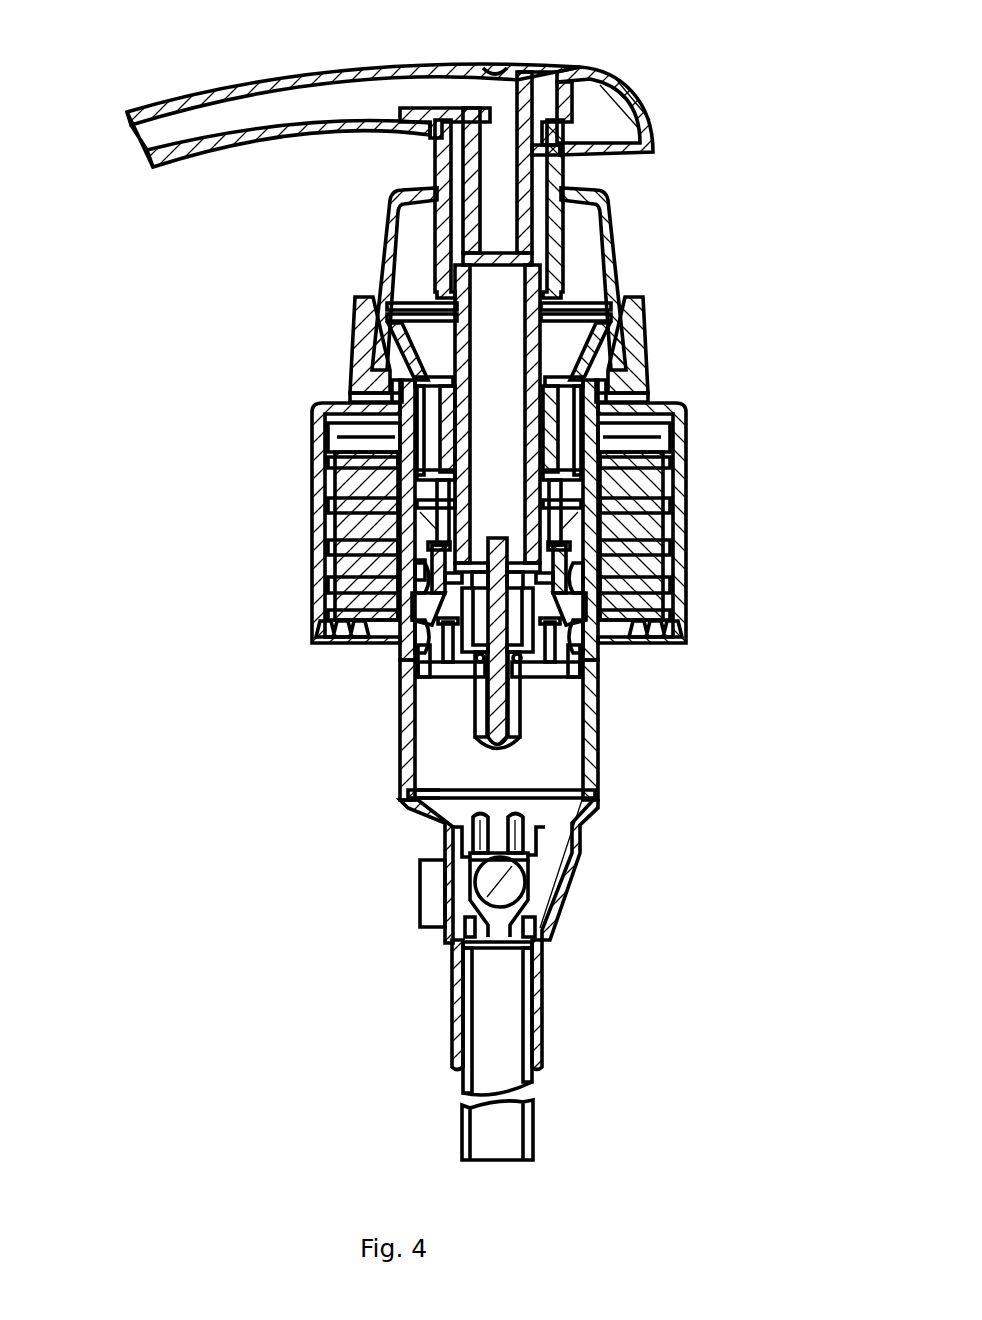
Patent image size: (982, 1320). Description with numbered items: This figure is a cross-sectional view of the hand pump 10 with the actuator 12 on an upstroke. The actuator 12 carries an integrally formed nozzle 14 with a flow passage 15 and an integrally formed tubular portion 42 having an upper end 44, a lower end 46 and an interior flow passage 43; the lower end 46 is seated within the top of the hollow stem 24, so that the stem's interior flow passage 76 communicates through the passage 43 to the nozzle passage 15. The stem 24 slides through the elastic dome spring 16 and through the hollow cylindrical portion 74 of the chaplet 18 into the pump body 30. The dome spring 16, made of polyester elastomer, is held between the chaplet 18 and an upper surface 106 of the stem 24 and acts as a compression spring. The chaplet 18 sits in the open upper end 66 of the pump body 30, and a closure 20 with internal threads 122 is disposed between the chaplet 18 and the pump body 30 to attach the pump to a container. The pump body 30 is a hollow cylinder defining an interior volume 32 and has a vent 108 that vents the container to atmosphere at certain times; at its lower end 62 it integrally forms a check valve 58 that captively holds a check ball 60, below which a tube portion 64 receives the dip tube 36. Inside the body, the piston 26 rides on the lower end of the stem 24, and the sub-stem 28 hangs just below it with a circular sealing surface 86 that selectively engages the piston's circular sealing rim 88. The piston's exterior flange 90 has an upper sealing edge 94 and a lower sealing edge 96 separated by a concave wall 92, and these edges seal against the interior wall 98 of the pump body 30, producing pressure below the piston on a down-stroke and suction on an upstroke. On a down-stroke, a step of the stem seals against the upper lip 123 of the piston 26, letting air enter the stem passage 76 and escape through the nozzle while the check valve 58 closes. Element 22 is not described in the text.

The hand pump 10 is at (729, 171).
The actuator 12 is at (628, 84).
The nozzle 14 is at (318, 70).
The flow passage 15 is at (150, 132).
The elastic dome spring 16 is at (376, 262).
The chaplet 18 is at (357, 349).
The closure 20 is at (325, 640).
The closure cap 22 is at (326, 497).
The hollow stem 24 is at (590, 330).
The piston 26 is at (440, 690).
The sub-stem 28 is at (477, 733).
The pump body 30 is at (420, 796).
The interior volume 32 is at (575, 755).
The dip tube 36 is at (462, 1128).
The tubular portion 42 is at (548, 78).
The interior flow passage 43 is at (505, 152).
The upper end 44 is at (503, 68).
The lower end 46 is at (605, 220).
The check valve 58 is at (420, 888).
The check ball 60 is at (515, 887).
The lower end 62 is at (592, 812).
The tube portion 64 is at (542, 1020).
The upper end 66 is at (632, 398).
The hollow cylindrical portion 74 is at (555, 452).
The interior flow passage 76 is at (512, 300).
The circular sealing surface 86 is at (565, 648).
The circular sealing rim 88 is at (540, 622).
The exterior flange 90 is at (610, 608).
The concave wall 92 is at (440, 608).
The upper sealing edge 94 is at (340, 549).
The lower sealing edge 96 is at (430, 655).
The interior wall 98 is at (580, 792).
The upper surface 106 is at (440, 150).
The vent 108 is at (595, 552).
The internal threads 122 is at (418, 572).
The upper lip 123 is at (540, 600).